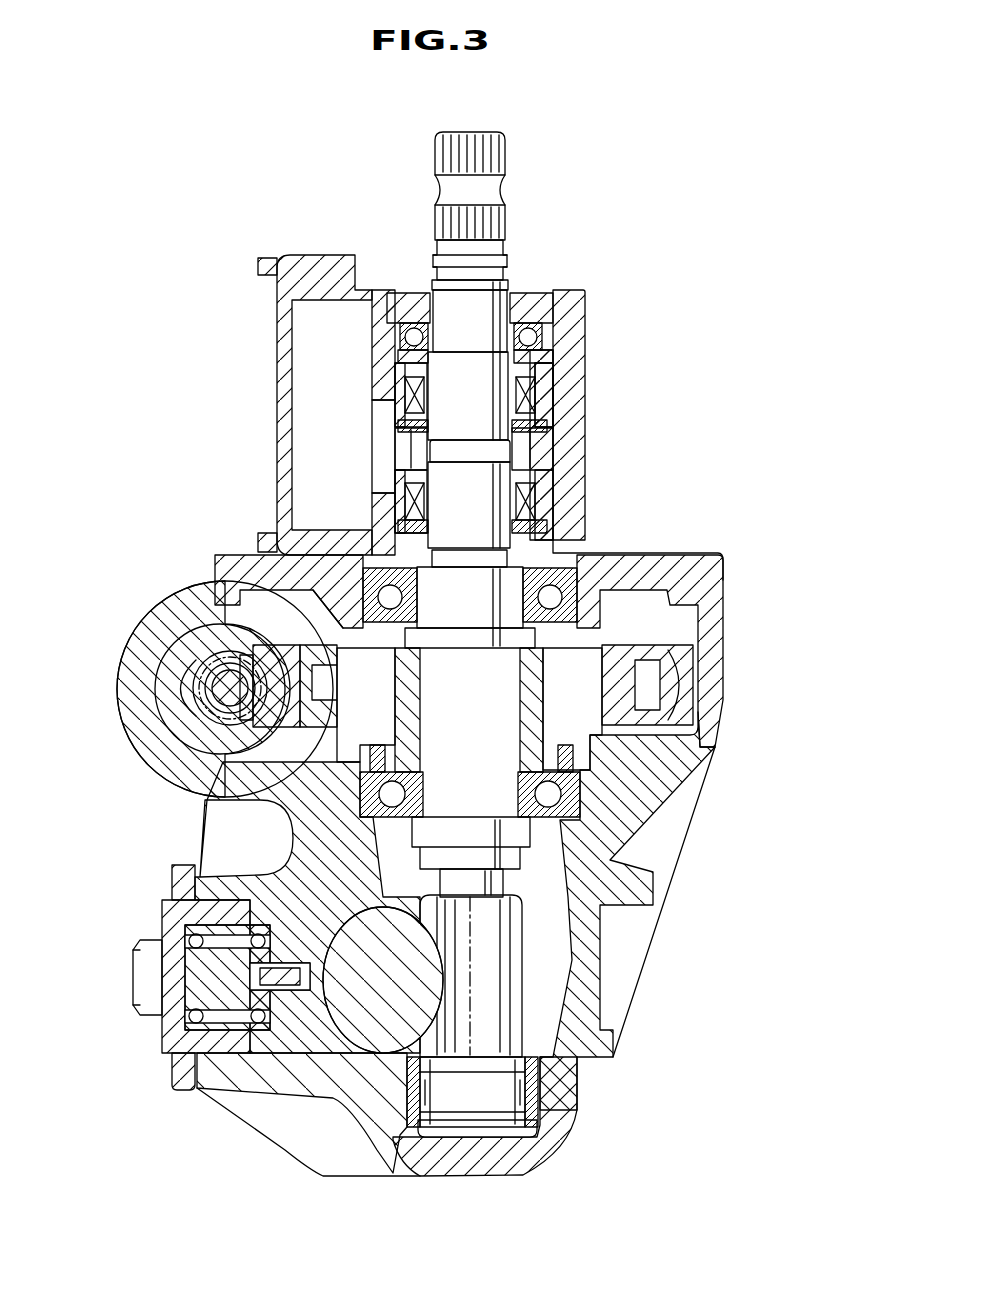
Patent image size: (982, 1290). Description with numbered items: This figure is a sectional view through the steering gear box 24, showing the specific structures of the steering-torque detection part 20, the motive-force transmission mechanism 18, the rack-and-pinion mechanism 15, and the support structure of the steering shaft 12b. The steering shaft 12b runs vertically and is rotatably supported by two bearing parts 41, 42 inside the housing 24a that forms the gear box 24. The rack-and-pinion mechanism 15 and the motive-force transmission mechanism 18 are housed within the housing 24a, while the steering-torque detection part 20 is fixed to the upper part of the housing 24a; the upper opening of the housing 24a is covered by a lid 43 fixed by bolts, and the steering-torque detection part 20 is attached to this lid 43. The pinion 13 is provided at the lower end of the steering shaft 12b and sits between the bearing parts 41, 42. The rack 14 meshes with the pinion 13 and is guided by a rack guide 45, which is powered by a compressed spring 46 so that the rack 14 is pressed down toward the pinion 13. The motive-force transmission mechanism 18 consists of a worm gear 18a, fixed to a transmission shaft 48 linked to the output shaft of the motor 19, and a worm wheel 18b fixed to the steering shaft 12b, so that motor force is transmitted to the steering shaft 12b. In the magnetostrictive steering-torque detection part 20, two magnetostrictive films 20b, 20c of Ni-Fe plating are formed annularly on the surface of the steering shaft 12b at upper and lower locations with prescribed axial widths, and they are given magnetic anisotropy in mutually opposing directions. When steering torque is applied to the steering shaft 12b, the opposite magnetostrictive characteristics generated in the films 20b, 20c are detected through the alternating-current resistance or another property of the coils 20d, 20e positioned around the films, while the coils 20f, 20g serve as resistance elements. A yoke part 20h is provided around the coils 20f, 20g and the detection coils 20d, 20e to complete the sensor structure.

The steering shaft 12b is at (490, 182).
The pinion 13 is at (525, 955).
The rack 14 is at (355, 1010).
The rack-and-pinion mechanism 15 is at (518, 1017).
The motive-force transmission mechanism 18 is at (236, 733).
The worm gear 18a is at (175, 658).
The worm wheel 18b is at (268, 638).
The motor 19 is at (180, 596).
The steering-torque detection part 20 is at (625, 405).
The magnetostrictive film 20b is at (462, 372).
The magnetostrictive film 20c is at (470, 548).
The coil 20d is at (565, 380).
The coil 20e is at (560, 520).
The coil 20f is at (552, 490).
The coil 20g is at (555, 405).
The yoke part 20h is at (580, 335).
The gear box 24 is at (165, 845).
The housing 24a is at (725, 728).
The bearing part 41 is at (600, 787).
The bearing part 42 is at (545, 1085).
The lid 43 is at (690, 553).
The rack guide 45 is at (195, 1082).
The compressed spring 46 is at (190, 925).
The transmission shaft 48 is at (212, 692).